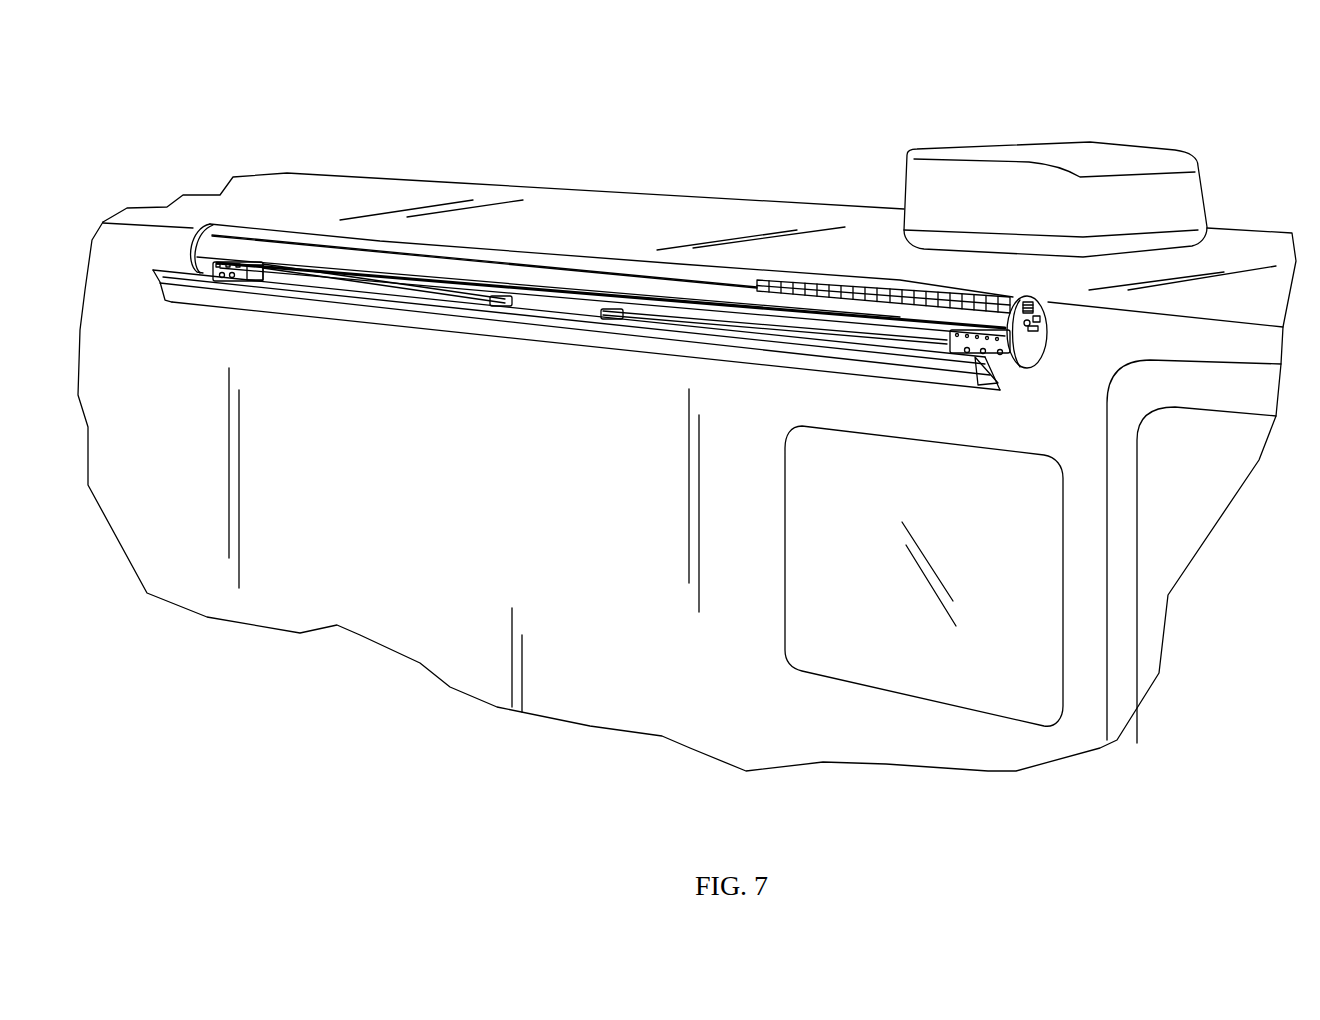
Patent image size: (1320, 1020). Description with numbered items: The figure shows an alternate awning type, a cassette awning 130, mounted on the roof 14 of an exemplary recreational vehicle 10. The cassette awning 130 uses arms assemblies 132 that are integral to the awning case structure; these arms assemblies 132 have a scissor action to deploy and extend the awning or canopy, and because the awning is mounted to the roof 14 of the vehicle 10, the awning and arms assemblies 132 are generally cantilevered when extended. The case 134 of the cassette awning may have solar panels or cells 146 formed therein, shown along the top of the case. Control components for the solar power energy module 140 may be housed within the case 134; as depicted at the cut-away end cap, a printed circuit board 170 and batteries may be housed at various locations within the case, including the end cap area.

The recreational vehicle 10 is at (1086, 102).
The roof 14 is at (262, 195).
The cassette awning 130 is at (195, 222).
The arms assemblies 132 is at (338, 290).
The case 134 is at (585, 265).
The solar power energy module 140 is at (887, 273).
The solar panels or cells 146 is at (963, 292).
The printed circuit board 170 is at (1045, 328).